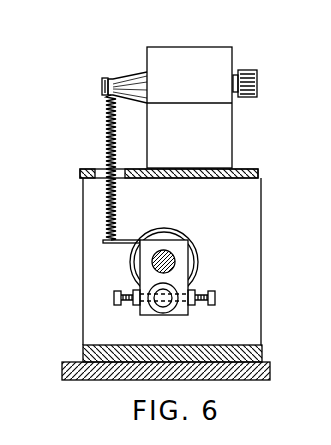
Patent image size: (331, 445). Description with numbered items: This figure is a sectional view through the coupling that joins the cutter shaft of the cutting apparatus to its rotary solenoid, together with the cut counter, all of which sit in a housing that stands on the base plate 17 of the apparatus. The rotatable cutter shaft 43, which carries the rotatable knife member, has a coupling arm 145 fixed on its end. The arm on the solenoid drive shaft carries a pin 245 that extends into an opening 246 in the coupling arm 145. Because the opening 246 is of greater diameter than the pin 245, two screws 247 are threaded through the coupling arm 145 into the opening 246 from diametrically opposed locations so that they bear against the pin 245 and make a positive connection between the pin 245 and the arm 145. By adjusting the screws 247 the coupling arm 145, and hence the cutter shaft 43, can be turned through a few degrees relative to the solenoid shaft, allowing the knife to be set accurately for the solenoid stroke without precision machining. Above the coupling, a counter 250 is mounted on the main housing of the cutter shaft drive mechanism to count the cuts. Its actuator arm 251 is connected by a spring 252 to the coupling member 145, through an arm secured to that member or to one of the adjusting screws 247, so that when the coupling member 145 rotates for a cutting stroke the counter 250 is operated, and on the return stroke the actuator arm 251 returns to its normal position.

The base plate 17 is at (68, 377).
The cutter shaft 43 is at (175, 258).
The coupling arm 145 is at (170, 245).
The pin 245 is at (172, 310).
The opening 246 is at (153, 308).
The screws 247 is at (119, 291).
The counter 250 is at (204, 88).
The actuator arm 251 is at (102, 83).
The spring 252 is at (107, 122).